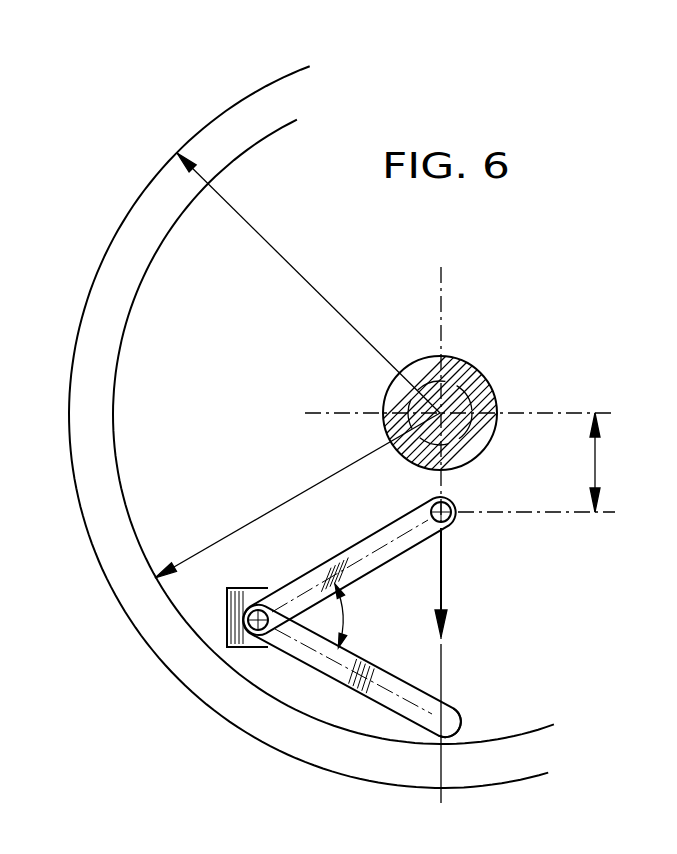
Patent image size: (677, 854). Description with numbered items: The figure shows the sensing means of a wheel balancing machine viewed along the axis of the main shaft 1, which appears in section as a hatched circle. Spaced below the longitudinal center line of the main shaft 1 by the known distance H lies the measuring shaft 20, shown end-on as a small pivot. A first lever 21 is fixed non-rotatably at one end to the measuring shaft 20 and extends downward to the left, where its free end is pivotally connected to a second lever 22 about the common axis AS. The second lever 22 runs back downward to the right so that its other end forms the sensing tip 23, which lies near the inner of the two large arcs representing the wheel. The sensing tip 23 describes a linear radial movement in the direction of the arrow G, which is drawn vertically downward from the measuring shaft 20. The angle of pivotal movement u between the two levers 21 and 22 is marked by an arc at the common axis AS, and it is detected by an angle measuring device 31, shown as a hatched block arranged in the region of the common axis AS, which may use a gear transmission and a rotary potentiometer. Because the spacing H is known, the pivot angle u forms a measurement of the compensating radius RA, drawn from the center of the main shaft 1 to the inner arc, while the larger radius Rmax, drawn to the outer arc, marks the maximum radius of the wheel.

The main shaft 1 is at (478, 362).
The measuring shaft 20 is at (456, 518).
The first lever 21 is at (355, 558).
The second lever 22 is at (395, 697).
The sensing tip 23 is at (442, 742).
The angle measuring device 31 is at (240, 647).
The common axis of pivotal movement AS is at (264, 634).
The maximum radius Rmax is at (313, 287).
The compensating radius RA is at (225, 538).
The spacing of the shaft center lines H is at (596, 462).
The direction of linear radial movement G is at (455, 582).
The pivot angle u is at (332, 616).